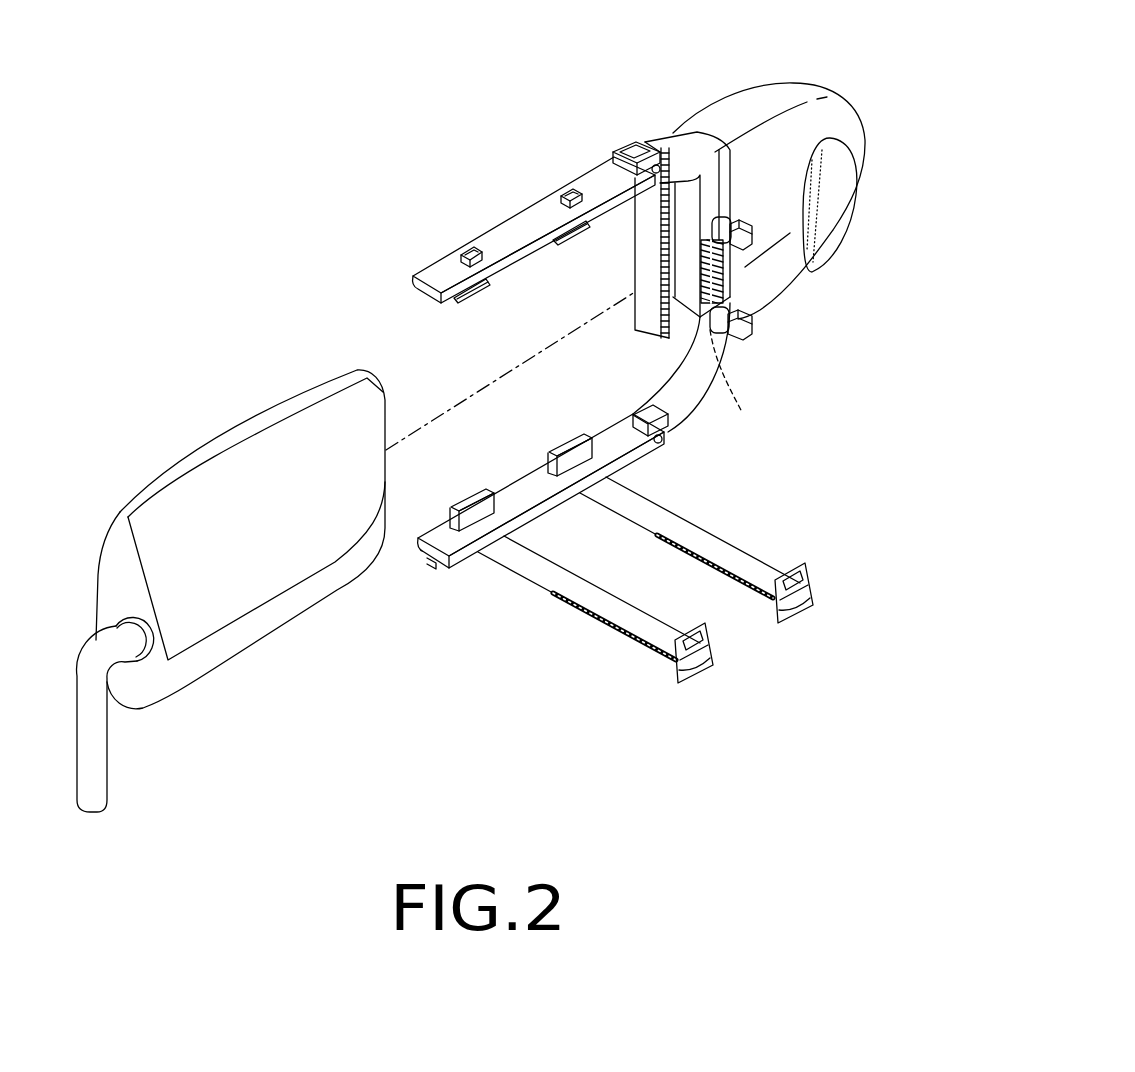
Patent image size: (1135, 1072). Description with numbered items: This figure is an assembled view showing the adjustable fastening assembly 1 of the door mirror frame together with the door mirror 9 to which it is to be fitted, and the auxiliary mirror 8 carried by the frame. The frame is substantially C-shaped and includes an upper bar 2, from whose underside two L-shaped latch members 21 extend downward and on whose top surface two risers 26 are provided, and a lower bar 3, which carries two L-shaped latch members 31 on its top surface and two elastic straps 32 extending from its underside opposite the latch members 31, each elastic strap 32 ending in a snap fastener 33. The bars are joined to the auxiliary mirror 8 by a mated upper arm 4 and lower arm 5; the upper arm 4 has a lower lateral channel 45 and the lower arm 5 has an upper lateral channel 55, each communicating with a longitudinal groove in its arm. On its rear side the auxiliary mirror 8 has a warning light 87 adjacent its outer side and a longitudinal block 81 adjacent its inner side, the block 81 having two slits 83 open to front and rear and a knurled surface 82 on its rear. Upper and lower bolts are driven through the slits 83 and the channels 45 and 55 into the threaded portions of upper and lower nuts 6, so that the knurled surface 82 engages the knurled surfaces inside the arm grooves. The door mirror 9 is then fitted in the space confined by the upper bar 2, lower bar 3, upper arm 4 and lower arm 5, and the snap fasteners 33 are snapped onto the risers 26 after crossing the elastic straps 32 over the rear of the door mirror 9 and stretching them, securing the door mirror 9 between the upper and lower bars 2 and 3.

The adjustable fastening assembly 1 is at (378, 318).
The upper bar 2 is at (511, 225).
The L-shaped latch members 21 is at (560, 250).
The risers 26 is at (566, 192).
The lower bar 3 is at (450, 570).
The L-shaped latch members 31 is at (569, 436).
The elastic straps 32 is at (705, 533).
The snap fastener 33 is at (795, 560).
The upper arm 4 is at (682, 186).
The lower lateral channel 45 is at (719, 150).
The lower arm 5 is at (704, 394).
The upper lateral channel 55 is at (743, 384).
The nuts 6 is at (745, 220).
The auxiliary mirror 8 is at (791, 171).
The longitudinal block 81 is at (688, 251).
The knurled surface 82 is at (638, 262).
The slits 83 is at (737, 272).
The warning light 87 is at (845, 222).
The door mirror 9 is at (288, 617).